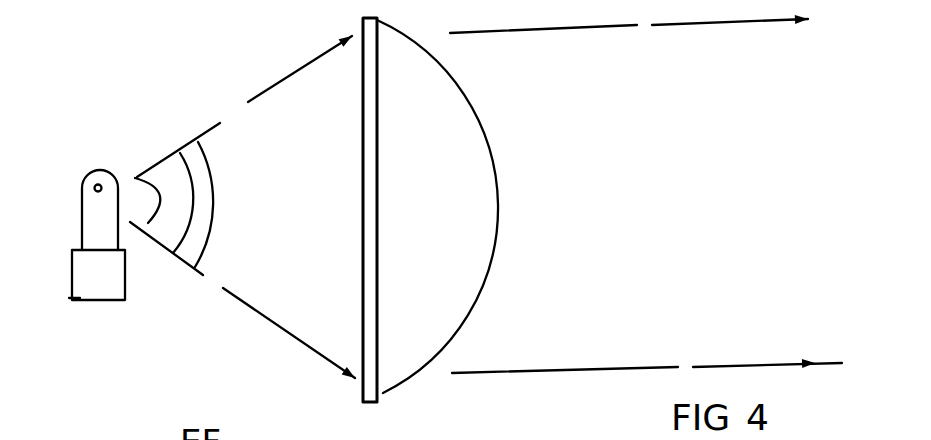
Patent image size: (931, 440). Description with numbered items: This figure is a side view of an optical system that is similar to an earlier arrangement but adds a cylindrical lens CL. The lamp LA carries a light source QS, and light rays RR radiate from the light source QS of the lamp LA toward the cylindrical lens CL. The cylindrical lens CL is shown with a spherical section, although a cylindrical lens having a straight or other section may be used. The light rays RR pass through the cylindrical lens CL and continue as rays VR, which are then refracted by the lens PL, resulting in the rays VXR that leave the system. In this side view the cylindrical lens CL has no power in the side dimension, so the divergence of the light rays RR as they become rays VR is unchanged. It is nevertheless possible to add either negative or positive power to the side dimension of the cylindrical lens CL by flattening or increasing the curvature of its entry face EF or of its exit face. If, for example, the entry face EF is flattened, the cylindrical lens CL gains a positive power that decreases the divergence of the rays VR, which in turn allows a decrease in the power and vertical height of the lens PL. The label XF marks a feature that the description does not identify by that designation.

The lamp LA is at (80, 205).
The light source QS is at (95, 177).
The light rays RR is at (148, 222).
The wavefront XF is at (210, 195).
The entry face EF is at (175, 232).
The cylindrical lens CL is at (182, 270).
The rays VR is at (263, 100).
The lens PL is at (478, 173).
The rays VXR is at (683, 32).